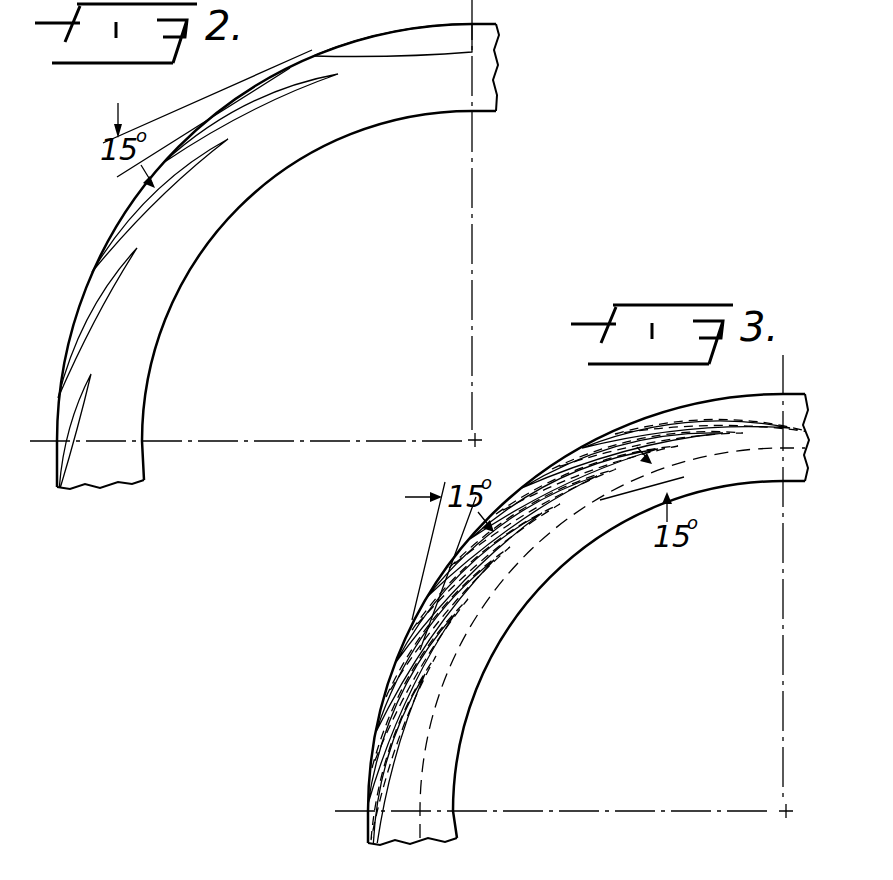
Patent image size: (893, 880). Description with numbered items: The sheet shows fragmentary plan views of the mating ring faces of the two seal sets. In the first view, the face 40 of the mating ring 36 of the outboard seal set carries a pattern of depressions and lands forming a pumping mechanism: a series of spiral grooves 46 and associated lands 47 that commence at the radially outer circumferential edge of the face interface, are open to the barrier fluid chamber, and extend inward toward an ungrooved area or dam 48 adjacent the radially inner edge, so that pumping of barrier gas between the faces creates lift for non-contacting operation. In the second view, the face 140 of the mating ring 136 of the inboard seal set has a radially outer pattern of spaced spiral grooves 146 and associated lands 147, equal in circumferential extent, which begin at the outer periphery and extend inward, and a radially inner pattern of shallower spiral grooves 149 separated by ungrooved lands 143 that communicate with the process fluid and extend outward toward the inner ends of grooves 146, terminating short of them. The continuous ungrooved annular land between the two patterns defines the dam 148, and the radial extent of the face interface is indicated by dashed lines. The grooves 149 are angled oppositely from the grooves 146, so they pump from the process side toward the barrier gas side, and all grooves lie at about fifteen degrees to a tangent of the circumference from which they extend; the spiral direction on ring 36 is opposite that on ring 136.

In FIG. 2, the mating ring 36 is at (152, 396).
In FIG. 2, the face 40 is at (172, 270).
In FIG. 2, the spiral grooves 46 is at (270, 97).
In FIG. 2, the lands 47 is at (100, 268).
In FIG. 2, the dam 48 is at (138, 348).
In FIG. 3, the mating ring 136 is at (464, 773).
In FIG. 3, the face 140 is at (447, 745).
In FIG. 3, the ungrooved lands 143 is at (522, 557).
In FIG. 3, the spiral grooves 146 is at (440, 641).
In FIG. 3, the lands 147 is at (583, 447).
In FIG. 3, the dam 148 is at (435, 680).
In FIG. 3, the spiral grooves 149 is at (503, 599).